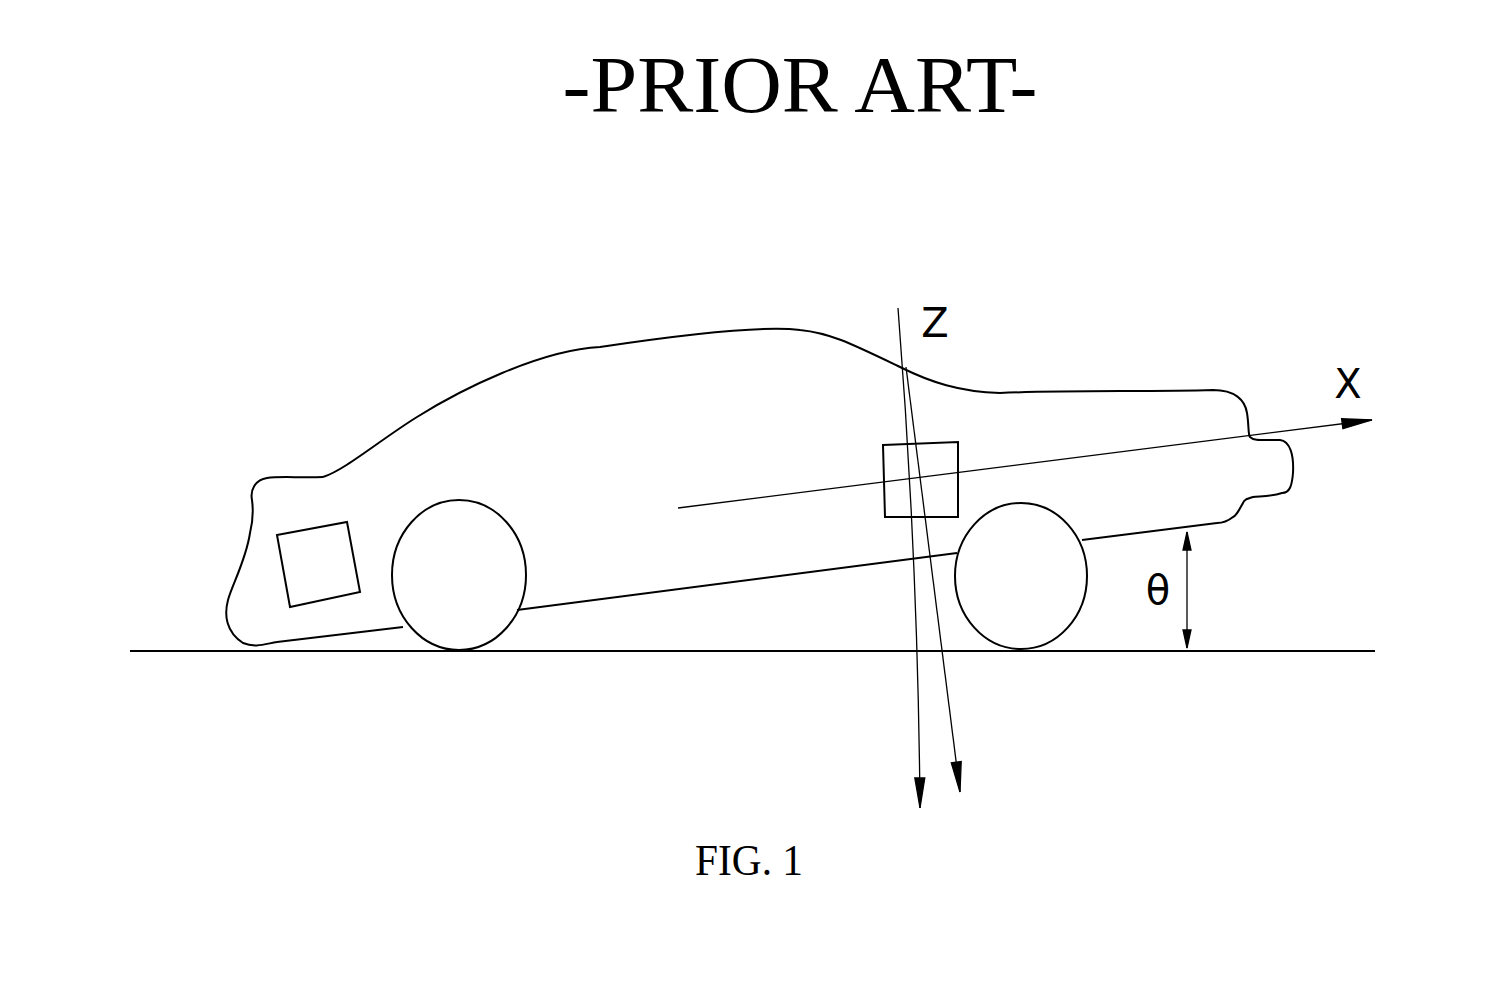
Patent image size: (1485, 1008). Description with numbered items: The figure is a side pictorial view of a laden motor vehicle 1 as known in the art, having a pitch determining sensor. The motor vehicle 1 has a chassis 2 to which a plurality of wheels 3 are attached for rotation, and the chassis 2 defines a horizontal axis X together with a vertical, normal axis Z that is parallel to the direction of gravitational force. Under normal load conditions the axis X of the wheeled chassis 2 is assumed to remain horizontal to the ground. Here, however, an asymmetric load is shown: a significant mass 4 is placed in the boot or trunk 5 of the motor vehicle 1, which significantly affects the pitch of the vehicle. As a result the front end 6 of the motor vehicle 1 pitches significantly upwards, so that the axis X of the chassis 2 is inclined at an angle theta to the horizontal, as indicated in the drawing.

The motor vehicle 1 is at (375, 392).
The chassis 2 is at (1077, 385).
The wheels 3 is at (458, 622).
The mass 4 is at (273, 545).
The boot or trunk 5 is at (242, 615).
The front end 6 is at (1323, 472).